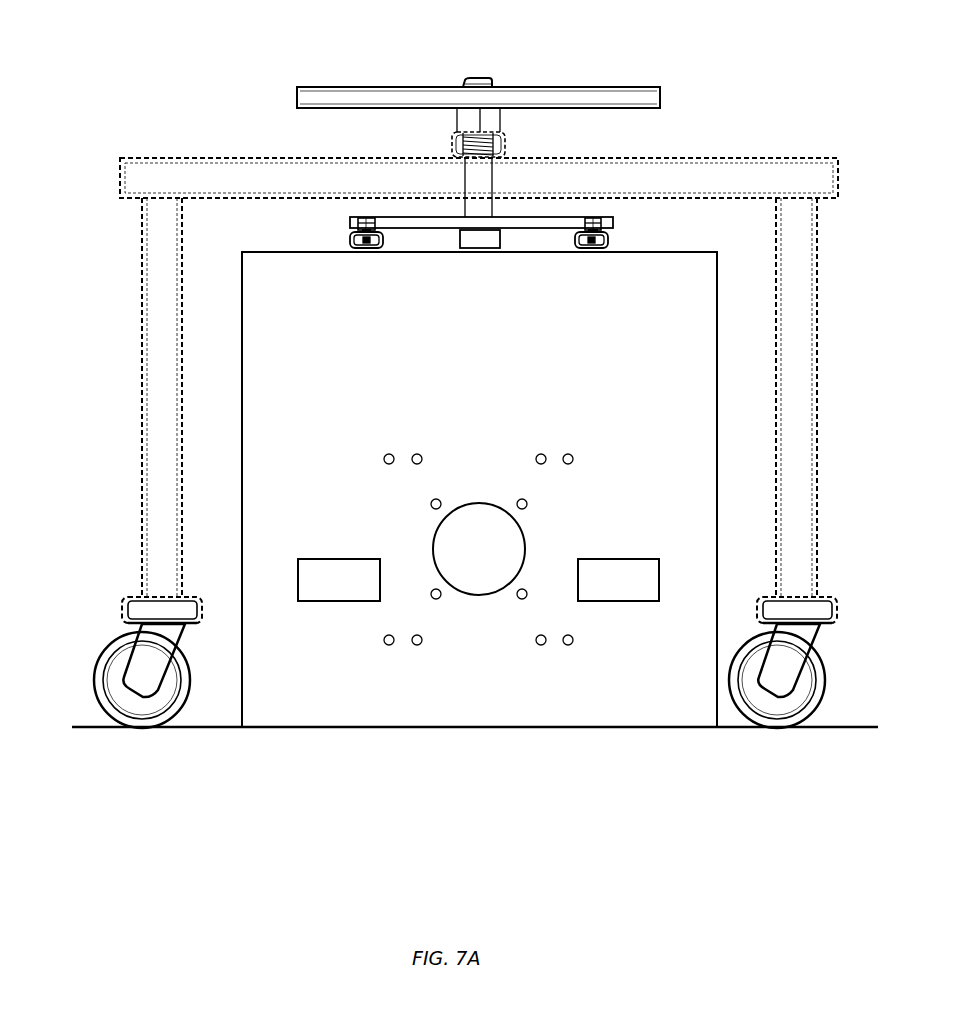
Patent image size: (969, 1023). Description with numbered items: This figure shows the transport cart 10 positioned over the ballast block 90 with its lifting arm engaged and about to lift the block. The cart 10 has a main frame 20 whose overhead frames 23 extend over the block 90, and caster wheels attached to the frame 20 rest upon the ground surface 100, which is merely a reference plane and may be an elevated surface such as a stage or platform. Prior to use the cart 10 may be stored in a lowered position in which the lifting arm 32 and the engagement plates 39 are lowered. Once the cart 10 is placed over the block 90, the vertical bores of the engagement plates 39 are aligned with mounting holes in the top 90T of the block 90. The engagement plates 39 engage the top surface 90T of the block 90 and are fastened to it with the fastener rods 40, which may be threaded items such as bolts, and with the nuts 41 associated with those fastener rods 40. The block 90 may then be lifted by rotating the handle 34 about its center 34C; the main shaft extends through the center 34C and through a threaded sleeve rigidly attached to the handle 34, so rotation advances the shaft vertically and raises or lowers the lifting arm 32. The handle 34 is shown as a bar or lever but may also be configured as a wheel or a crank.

The transport cart 10 is at (125, 368).
The main frame 20 is at (141, 492).
The overhead frames 23 is at (141, 443).
The lifting arm 32 is at (517, 216).
The handle 34 is at (600, 87).
The center of the handle 34C is at (513, 87).
The engagement plates 39 is at (350, 240).
The fastener rods 40 is at (366, 218).
The nut 41 is at (362, 218).
The ballast block 90 is at (717, 449).
The top 90T is at (262, 249).
The ground surface 100 is at (200, 729).